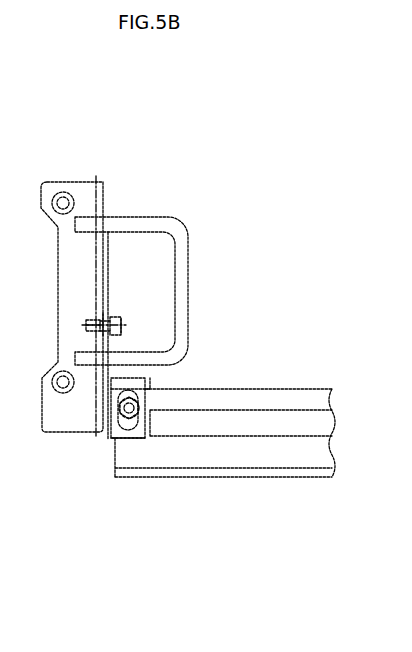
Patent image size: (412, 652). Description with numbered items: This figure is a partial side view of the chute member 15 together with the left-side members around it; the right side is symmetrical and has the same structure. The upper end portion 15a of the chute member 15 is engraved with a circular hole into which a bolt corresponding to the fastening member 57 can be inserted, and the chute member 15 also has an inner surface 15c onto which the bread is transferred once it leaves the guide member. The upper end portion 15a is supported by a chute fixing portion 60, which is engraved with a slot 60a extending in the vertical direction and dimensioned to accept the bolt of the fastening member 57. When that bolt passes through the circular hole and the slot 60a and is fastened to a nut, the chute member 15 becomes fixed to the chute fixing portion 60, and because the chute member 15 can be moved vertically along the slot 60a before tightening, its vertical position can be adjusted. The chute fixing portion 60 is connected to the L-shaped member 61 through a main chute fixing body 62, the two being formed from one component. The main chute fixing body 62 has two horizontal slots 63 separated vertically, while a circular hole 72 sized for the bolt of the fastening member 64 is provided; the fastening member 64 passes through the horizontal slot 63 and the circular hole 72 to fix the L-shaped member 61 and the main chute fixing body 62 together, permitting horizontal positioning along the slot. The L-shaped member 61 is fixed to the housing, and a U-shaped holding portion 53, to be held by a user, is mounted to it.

The chute member 15 is at (225, 446).
The upper end portion 15a is at (292, 399).
The inner surface 15c is at (250, 467).
The U-shaped holding portion 53 is at (185, 267).
The fastening member 57 is at (128, 410).
The chute fixing portion 60 is at (140, 385).
The slot 60a is at (128, 440).
The L-shaped member 61 is at (65, 424).
The main chute fixing body 62 is at (108, 315).
The horizontal slot 63 is at (113, 314).
The fastening member 64 is at (121, 325).
The circular hole 72 is at (85, 325).